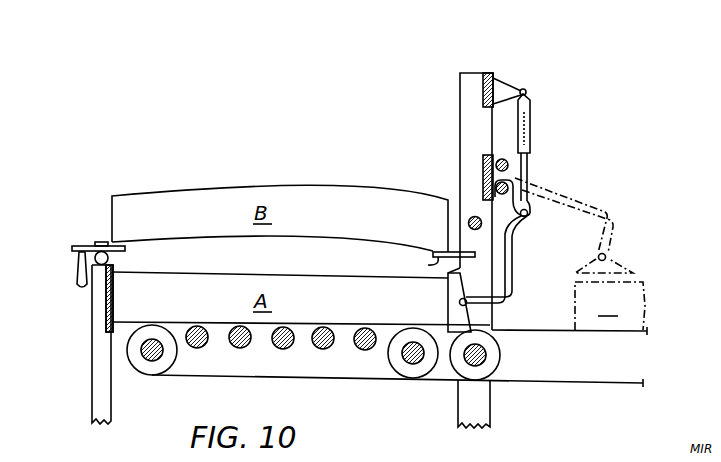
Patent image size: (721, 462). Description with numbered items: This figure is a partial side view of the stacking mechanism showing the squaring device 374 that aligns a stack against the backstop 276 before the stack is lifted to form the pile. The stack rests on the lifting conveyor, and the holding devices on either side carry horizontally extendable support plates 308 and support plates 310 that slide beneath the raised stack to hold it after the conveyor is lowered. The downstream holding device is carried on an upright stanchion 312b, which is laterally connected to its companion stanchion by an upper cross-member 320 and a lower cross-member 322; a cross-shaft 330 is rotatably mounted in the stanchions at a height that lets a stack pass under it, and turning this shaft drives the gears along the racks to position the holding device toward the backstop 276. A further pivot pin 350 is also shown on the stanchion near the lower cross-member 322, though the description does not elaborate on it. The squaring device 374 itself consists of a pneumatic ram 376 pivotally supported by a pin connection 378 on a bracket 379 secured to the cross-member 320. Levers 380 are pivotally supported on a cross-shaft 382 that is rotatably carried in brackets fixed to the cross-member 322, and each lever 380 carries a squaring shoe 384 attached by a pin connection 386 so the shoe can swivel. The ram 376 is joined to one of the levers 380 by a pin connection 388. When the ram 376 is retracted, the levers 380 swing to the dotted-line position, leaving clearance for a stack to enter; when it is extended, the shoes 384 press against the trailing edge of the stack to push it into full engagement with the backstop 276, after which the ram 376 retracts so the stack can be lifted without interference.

The backstop 276 is at (105, 301).
The support plates 308 is at (436, 261).
The support plates 310 is at (125, 251).
The upright stanchion 312b is at (460, 88).
The cross-member 320 is at (484, 78).
The cross-member 322 is at (483, 168).
The cross-shaft 330 is at (468, 222).
The pivot pin 350 is at (500, 159).
The squaring device 374 is at (637, 134).
The pneumatic ram 376 is at (531, 124).
The pin connection 378 is at (527, 89).
The bracket 379 is at (500, 79).
The levers 380 is at (612, 223).
The cross-shaft 382 is at (490, 186).
The squaring shoe 384 is at (529, 170).
The pin connection 386 is at (459, 304).
The pin connection 388 is at (512, 226).